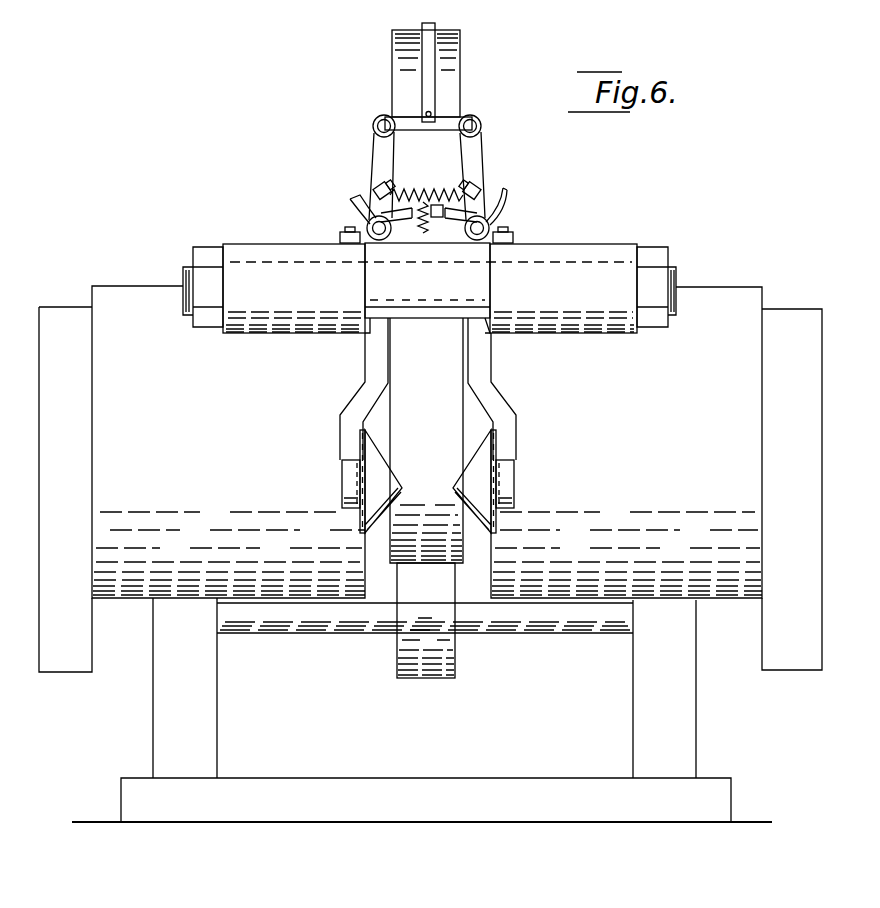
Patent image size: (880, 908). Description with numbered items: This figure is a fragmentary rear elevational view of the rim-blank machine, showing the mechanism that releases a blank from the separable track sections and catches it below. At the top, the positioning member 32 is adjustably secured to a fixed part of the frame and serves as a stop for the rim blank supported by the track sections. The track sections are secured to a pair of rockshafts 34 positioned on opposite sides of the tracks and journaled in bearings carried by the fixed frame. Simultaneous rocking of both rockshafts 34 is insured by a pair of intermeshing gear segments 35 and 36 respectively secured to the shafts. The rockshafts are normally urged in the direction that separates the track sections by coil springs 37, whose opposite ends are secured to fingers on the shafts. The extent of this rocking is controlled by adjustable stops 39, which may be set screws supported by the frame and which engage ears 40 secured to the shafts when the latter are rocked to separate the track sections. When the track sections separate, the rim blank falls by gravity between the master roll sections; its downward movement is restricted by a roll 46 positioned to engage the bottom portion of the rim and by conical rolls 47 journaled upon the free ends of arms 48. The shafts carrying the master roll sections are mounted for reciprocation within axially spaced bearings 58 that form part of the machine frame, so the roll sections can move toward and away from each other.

The positioning member 32 is at (432, 88).
The rockshafts 34 is at (479, 228).
The gear segment 35 is at (425, 232).
The gear segment 36 is at (435, 226).
The coil springs 37 is at (434, 193).
The adjustable stops 39 is at (396, 184).
The ears 40 is at (505, 200).
The roll 46 is at (453, 648).
The conical rolls 47 is at (467, 472).
The arms 48 is at (345, 427).
The bearings 58 is at (128, 592).